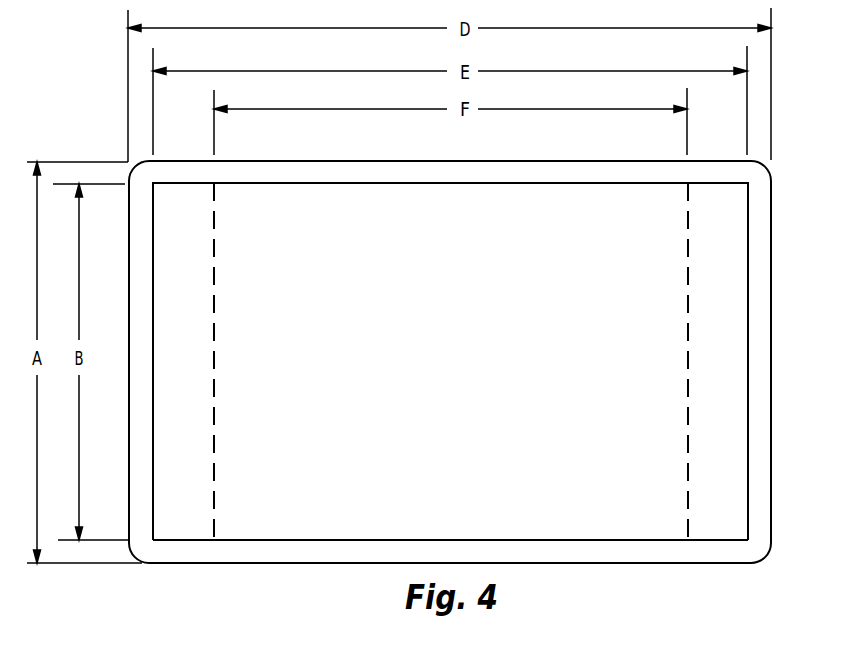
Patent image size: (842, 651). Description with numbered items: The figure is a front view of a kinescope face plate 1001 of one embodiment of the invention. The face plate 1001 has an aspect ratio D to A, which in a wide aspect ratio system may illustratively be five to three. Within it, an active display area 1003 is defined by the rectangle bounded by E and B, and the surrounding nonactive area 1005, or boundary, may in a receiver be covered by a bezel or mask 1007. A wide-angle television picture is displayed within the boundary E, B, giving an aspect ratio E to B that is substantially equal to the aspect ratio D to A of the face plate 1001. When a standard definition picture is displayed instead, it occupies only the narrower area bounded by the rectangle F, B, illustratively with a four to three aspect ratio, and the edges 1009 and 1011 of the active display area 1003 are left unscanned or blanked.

The face plate 1001 is at (772, 370).
The active display area 1003 is at (482, 369).
The nonactive area 1005 is at (758, 330).
The bezel or mask 1007 is at (758, 422).
The edge 1009 is at (203, 371).
The edge 1011 is at (732, 369).